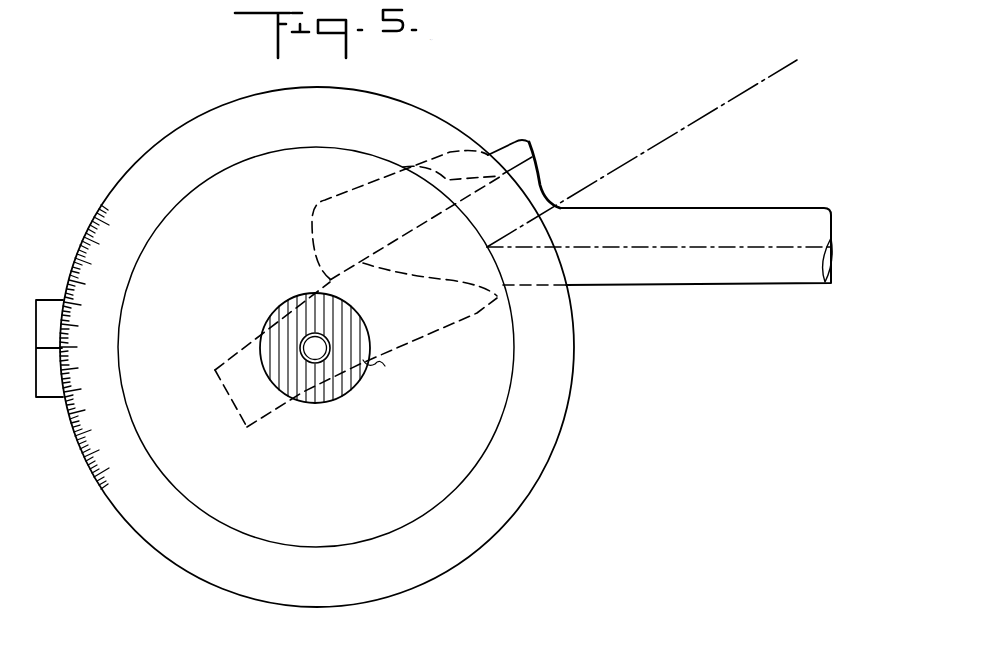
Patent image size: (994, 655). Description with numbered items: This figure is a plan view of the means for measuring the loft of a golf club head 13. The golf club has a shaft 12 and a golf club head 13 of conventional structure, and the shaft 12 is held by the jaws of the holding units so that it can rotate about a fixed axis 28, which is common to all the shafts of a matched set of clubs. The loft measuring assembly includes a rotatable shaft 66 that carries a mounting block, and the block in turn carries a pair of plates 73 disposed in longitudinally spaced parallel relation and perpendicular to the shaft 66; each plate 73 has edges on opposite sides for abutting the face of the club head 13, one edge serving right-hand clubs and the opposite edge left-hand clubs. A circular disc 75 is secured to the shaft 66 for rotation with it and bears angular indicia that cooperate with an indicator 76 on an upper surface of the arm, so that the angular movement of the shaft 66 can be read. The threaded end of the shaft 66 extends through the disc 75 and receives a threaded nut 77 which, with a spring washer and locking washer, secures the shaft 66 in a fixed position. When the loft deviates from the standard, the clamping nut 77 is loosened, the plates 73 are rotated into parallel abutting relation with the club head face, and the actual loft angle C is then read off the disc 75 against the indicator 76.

The shaft 12 is at (736, 274).
The golf club head 13 is at (528, 143).
The fixed axis 28 is at (652, 258).
The rotatable shaft 66 is at (311, 341).
The plates 73 is at (433, 340).
The circular disc 75 is at (85, 240).
The indicator 76 is at (47, 350).
The threaded nut 77 is at (340, 400).
The angle C is at (747, 245).